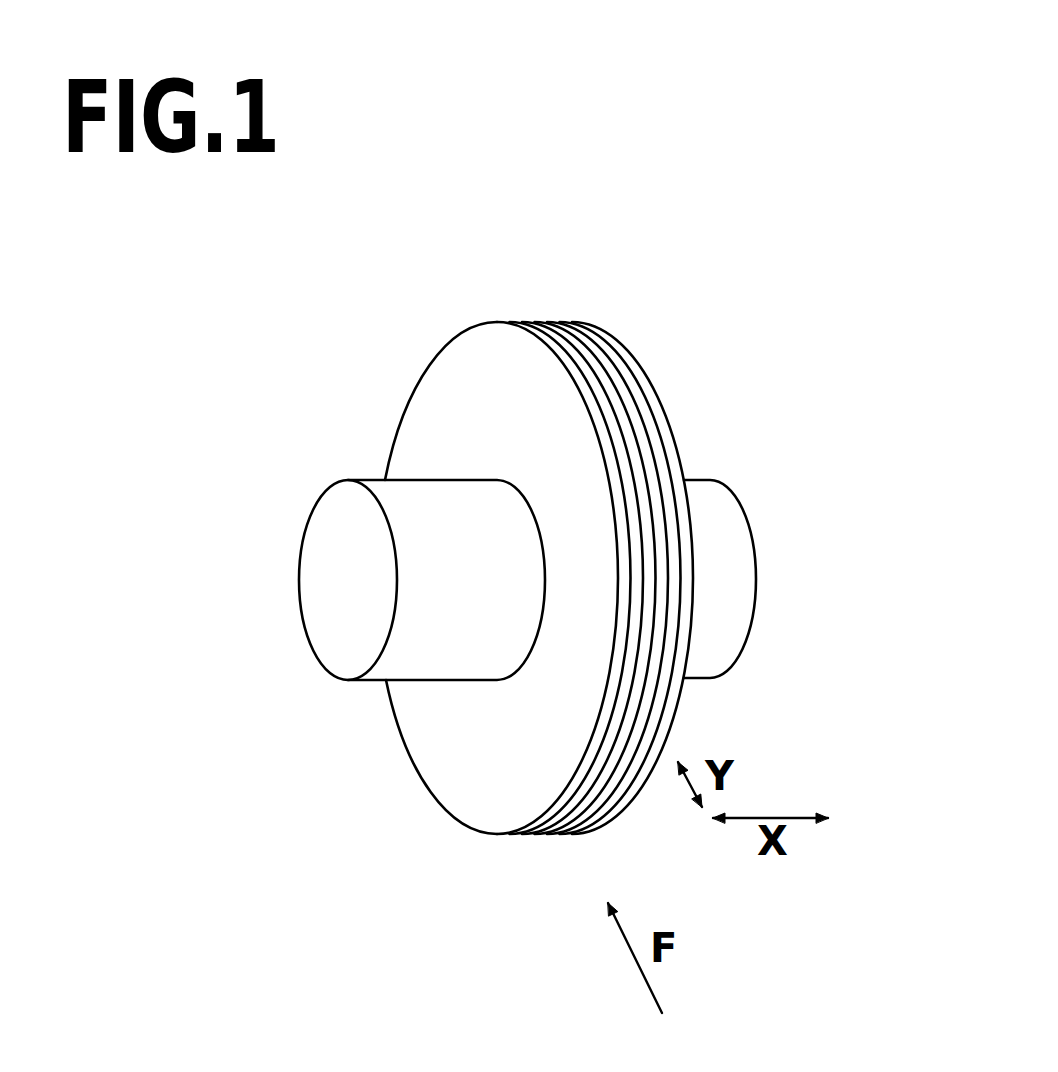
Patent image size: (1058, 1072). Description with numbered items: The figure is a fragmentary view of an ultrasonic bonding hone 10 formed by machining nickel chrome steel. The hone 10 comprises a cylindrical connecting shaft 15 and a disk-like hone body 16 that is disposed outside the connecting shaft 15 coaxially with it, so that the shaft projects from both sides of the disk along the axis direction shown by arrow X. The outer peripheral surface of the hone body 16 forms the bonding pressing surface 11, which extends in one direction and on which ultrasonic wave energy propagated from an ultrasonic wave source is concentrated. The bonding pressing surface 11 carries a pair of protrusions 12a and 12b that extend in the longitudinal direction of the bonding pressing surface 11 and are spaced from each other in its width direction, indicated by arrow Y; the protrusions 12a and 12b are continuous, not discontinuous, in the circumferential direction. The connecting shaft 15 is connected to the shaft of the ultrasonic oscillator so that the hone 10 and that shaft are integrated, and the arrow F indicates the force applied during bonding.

The ultrasonic bonding hone 10 is at (812, 178).
The bonding pressing surface 11 is at (552, 323).
The protrusion 12a is at (583, 323).
The protrusion 12b is at (487, 323).
The connecting shaft 15 is at (428, 503).
The hone body 16 is at (447, 405).